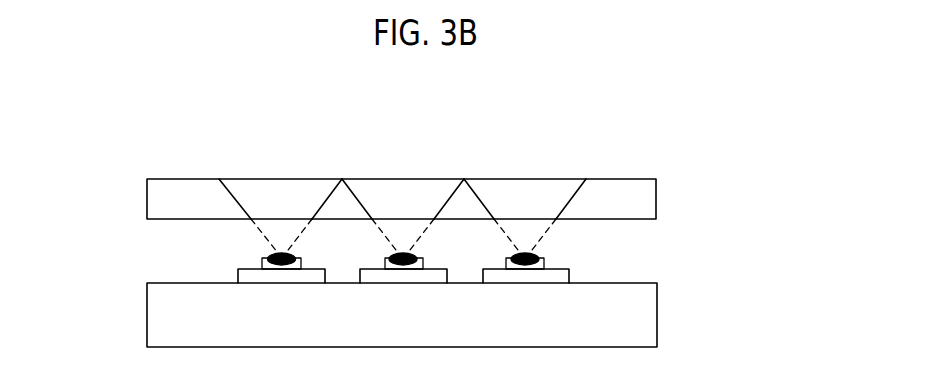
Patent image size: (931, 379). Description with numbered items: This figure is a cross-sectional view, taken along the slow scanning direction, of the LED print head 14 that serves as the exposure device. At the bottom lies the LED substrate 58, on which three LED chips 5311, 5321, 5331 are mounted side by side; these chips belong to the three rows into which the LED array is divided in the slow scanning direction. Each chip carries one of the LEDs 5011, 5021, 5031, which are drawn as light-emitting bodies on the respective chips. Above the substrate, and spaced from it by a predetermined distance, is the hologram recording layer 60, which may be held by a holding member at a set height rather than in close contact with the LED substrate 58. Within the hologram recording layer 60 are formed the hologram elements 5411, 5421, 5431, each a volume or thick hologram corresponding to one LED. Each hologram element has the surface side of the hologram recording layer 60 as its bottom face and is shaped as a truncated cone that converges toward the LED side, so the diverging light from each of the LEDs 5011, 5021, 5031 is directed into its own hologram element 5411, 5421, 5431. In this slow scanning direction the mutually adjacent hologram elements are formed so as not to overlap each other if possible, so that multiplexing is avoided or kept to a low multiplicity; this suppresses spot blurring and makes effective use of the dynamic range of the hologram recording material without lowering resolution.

The LED print head 14 is at (418, 166).
The LED 5011 is at (280, 257).
The LED 5021 is at (402, 257).
The LED 5031 is at (523, 257).
The LED chip 5311 is at (230, 263).
The LED chip 5321 is at (353, 280).
The LED chip 5331 is at (577, 270).
The hologram element 5411 is at (280, 194).
The hologram element 5421 is at (393, 194).
The hologram element 5431 is at (531, 194).
The LED substrate 58 is at (647, 317).
The hologram recording layer 60 is at (647, 202).